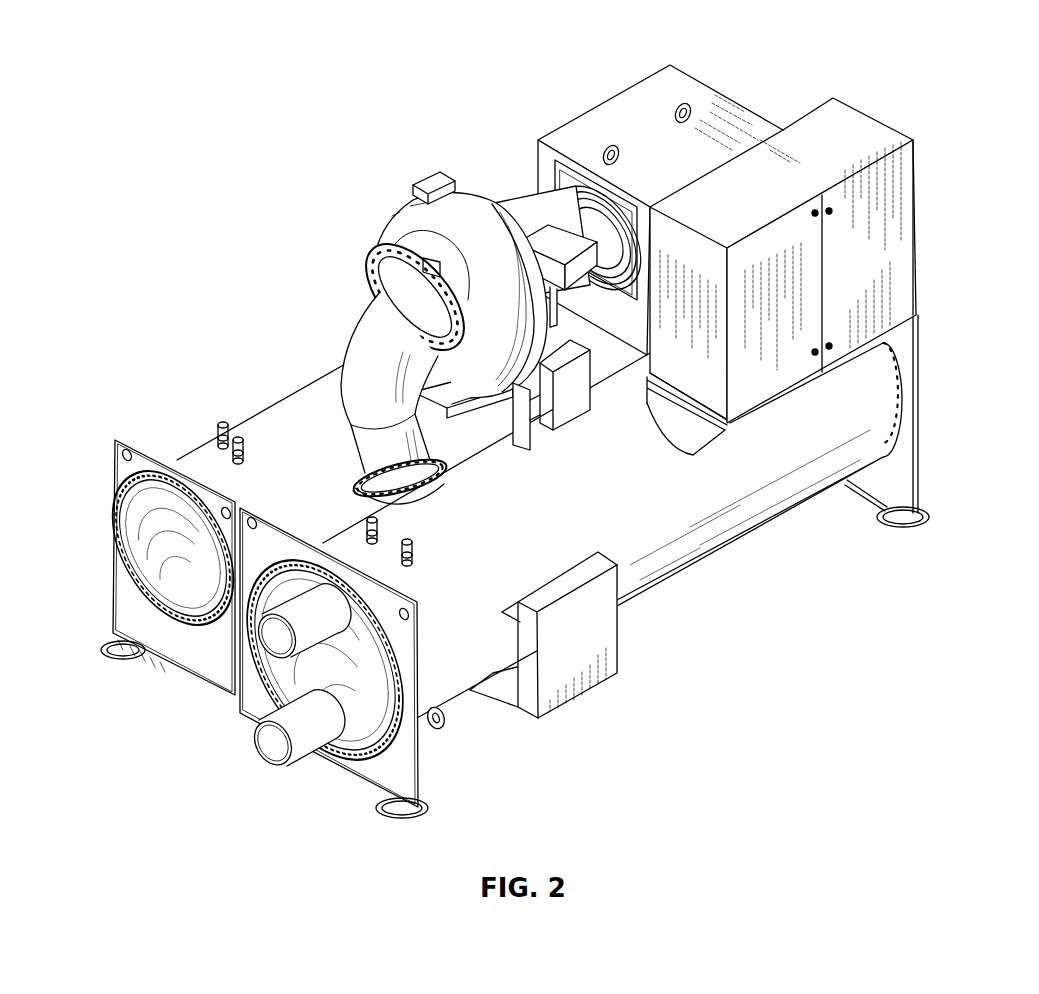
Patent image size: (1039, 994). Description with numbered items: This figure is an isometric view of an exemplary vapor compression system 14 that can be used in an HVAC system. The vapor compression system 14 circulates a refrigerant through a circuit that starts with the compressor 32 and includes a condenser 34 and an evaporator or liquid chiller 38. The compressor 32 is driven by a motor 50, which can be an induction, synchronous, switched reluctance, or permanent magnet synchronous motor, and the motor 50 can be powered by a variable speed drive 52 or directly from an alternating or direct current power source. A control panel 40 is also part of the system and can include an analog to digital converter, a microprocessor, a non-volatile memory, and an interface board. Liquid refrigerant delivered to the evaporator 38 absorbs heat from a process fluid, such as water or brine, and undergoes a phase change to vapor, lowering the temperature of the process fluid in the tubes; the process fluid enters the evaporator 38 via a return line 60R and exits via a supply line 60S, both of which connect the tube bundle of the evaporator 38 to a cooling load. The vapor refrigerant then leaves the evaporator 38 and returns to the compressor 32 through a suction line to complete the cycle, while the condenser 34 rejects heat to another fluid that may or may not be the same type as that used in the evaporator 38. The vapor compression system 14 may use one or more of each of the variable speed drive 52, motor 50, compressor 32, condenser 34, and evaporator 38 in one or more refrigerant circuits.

The vapor compression system 14 is at (539, 434).
The compressor 32 is at (428, 212).
The condenser 34 is at (300, 395).
The evaporator 38 is at (708, 525).
The control panel 40 is at (580, 653).
The motor 50 is at (582, 133).
The variable speed drive 52 is at (893, 217).
The supply line 60S is at (262, 633).
The return line 60R is at (262, 742).